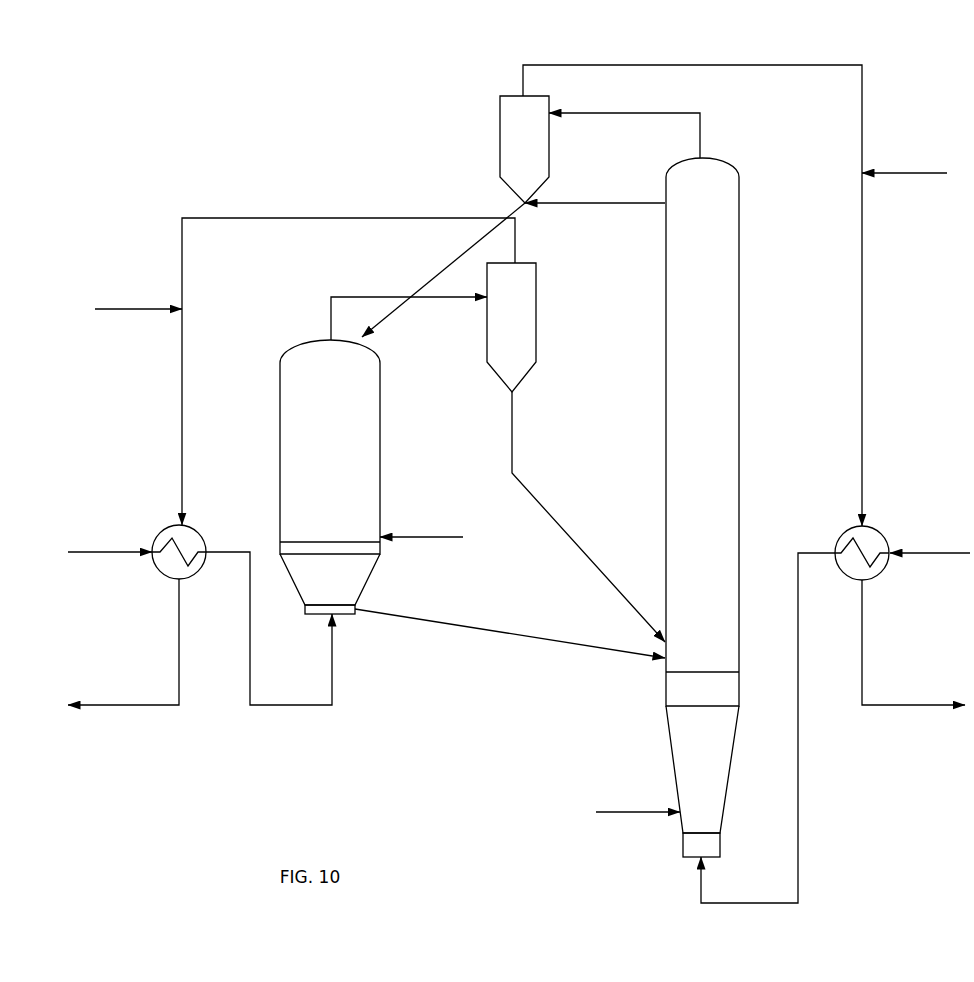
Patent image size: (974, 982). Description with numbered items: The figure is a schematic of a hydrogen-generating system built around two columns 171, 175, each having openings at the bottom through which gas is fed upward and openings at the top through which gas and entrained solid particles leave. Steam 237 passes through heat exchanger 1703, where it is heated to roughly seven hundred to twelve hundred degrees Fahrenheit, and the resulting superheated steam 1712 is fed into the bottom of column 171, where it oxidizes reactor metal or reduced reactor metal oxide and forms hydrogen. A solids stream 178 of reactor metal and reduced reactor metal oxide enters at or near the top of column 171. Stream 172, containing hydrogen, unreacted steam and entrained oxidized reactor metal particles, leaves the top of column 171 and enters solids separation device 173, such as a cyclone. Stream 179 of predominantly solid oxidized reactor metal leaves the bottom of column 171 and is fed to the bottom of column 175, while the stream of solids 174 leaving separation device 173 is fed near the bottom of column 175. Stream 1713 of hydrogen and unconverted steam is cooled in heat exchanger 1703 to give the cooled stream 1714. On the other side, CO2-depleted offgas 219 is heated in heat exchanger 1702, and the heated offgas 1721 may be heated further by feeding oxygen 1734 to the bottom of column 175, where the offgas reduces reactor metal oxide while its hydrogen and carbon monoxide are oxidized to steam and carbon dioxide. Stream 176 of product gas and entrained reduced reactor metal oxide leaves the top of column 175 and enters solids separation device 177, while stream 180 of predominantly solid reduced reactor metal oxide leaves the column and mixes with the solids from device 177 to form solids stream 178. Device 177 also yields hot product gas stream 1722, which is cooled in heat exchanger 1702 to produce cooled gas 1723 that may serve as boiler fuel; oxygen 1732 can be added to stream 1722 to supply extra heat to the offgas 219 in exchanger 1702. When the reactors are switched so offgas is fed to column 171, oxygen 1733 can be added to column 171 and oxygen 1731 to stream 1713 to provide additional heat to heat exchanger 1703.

The column 171 is at (330, 477).
The stream containing hydrogen 172 is at (409, 304).
The solids separation device 173 is at (511, 327).
The stream of solids 174 is at (588, 517).
The column 175 is at (702, 507).
The stream containing product gas 176 is at (624, 135).
The solids separation device 177 is at (524, 149).
The solids stream 178 is at (443, 270).
The stream of solid oxidized reactor metal 179 is at (510, 631).
The stream of solid reduced reactor metal oxide 180 is at (595, 215).
The steam 237 is at (110, 539).
The CO2-depleted offgas 219 is at (930, 540).
The heat exchanger 1702 is at (890, 520).
The heat exchanger 1703 is at (150, 520).
The superheated steam 1712 is at (269, 628).
The stream comprising hydrogen and unconverted steam 1713 is at (348, 357).
The cooled stream 1714 is at (123, 642).
The heated offgas 1721 is at (777, 728).
The stream of hot product gas 1722 is at (692, 283).
The cooled gas 1723 is at (913, 642).
The oxygen 1731 is at (138, 295).
The oxygen 1732 is at (904, 159).
The oxygen 1733 is at (421, 523).
The oxygen 1734 is at (638, 798).